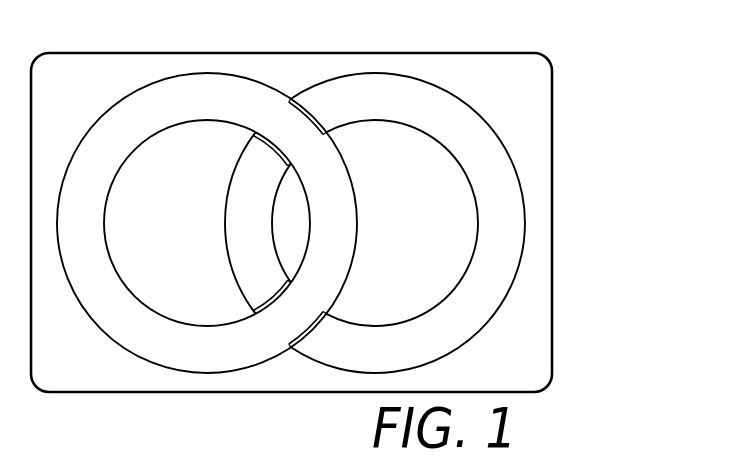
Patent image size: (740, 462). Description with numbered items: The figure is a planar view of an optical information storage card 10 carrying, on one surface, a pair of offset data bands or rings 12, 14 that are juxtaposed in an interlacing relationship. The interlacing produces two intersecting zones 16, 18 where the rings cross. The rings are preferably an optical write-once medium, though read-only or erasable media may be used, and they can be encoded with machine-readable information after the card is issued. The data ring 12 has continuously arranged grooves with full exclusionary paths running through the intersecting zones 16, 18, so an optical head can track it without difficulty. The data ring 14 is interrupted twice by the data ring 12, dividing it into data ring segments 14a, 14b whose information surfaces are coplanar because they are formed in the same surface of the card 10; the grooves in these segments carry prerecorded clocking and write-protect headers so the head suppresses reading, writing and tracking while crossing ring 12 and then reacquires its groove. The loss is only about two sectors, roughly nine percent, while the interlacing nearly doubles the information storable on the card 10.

The optical information storage card 10 is at (630, 74).
The data ring 12 is at (108, 138).
The data ring 14 is at (515, 197).
The data ring segment 14a is at (488, 286).
The data ring segment 14b is at (243, 227).
The intersecting zone 16 is at (282, 122).
The intersecting zone 18 is at (285, 324).